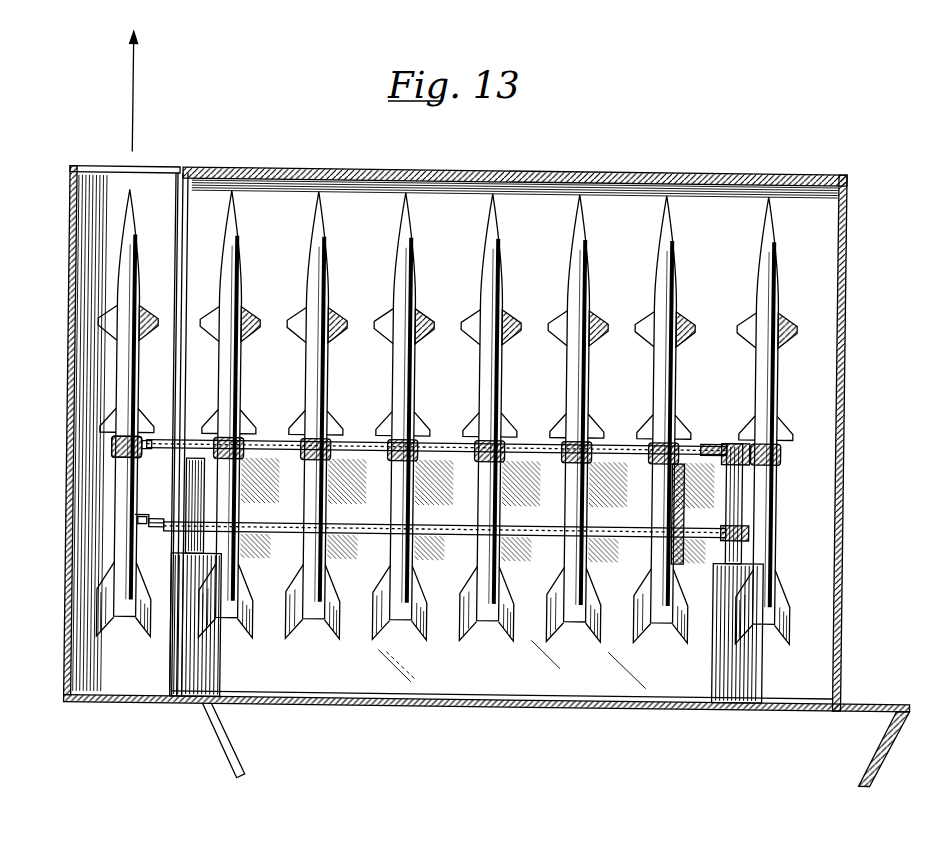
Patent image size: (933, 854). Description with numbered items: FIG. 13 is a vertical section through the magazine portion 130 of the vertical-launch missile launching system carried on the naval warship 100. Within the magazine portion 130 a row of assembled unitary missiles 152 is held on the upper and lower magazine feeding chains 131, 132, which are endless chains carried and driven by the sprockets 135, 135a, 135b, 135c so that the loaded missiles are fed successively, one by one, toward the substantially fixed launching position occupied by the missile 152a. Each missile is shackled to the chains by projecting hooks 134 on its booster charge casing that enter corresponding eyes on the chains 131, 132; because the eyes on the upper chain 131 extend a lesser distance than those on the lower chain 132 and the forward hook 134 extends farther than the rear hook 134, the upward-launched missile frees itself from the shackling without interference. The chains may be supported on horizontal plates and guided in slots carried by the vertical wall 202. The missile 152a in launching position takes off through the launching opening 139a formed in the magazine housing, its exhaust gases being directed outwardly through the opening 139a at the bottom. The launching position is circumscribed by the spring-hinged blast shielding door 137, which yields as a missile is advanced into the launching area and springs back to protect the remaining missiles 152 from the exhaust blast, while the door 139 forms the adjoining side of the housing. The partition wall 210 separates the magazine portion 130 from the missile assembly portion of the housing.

The naval warship 100 is at (856, 690).
The magazine portion 130 is at (824, 337).
The upper magazine feeding chain 131 is at (268, 446).
The lower magazine feeding chain 132 is at (272, 529).
The projecting hook 134 is at (155, 442).
The sprocket 135 is at (154, 453).
The sprocket 135a is at (715, 439).
The sprocket 135b is at (156, 518).
The sprocket 135c is at (749, 523).
The blast shielding door 137 is at (181, 230).
The door 139 is at (150, 698).
The launching opening 139a is at (137, 173).
The unitary missile 152 is at (501, 281).
The missile in launching position 152a is at (127, 372).
The vertical wall 202 is at (362, 698).
The partition wall 210 is at (372, 234).